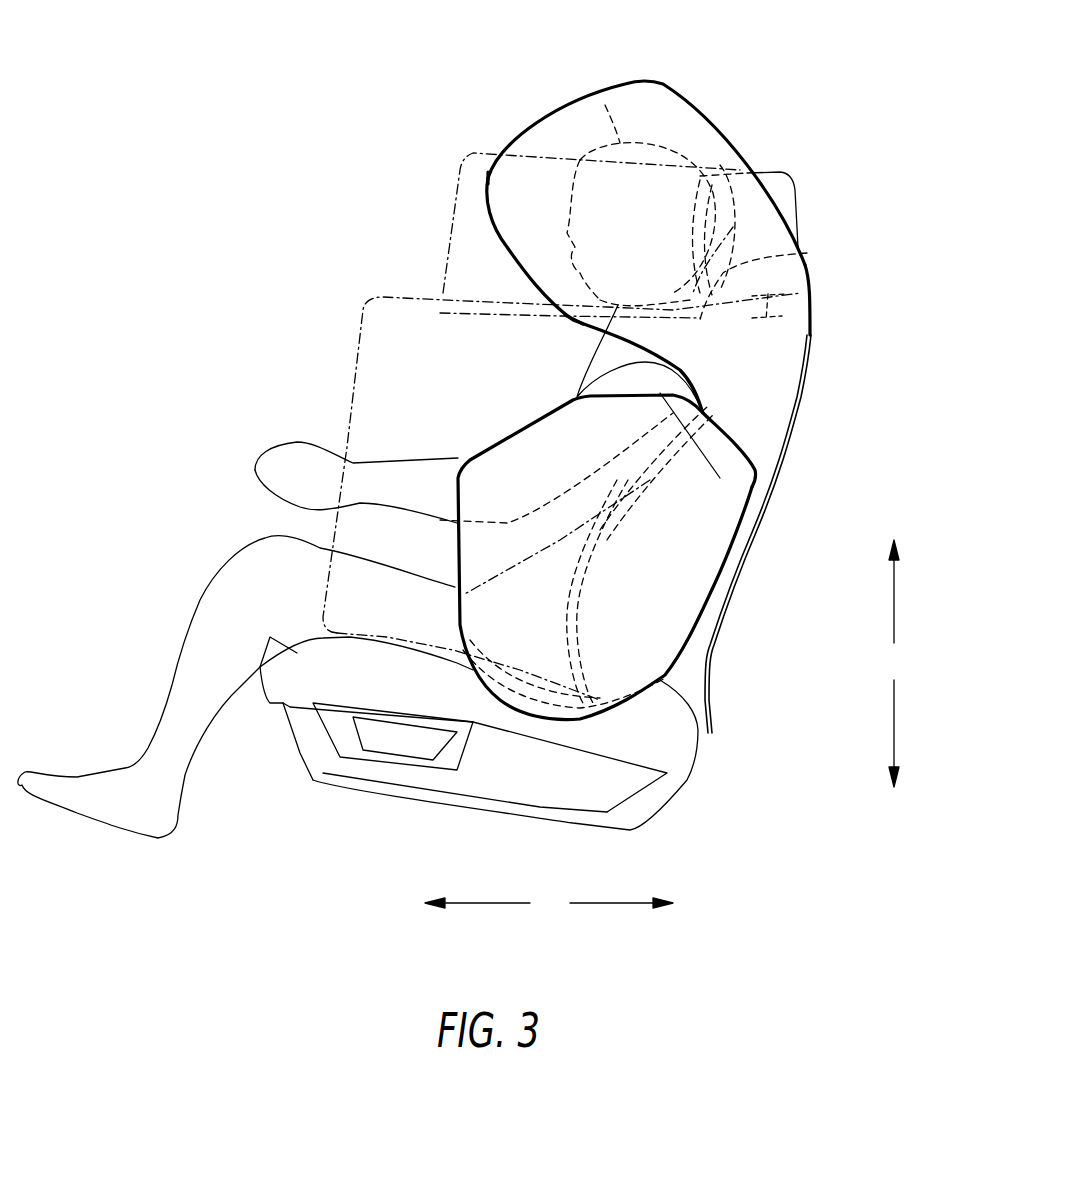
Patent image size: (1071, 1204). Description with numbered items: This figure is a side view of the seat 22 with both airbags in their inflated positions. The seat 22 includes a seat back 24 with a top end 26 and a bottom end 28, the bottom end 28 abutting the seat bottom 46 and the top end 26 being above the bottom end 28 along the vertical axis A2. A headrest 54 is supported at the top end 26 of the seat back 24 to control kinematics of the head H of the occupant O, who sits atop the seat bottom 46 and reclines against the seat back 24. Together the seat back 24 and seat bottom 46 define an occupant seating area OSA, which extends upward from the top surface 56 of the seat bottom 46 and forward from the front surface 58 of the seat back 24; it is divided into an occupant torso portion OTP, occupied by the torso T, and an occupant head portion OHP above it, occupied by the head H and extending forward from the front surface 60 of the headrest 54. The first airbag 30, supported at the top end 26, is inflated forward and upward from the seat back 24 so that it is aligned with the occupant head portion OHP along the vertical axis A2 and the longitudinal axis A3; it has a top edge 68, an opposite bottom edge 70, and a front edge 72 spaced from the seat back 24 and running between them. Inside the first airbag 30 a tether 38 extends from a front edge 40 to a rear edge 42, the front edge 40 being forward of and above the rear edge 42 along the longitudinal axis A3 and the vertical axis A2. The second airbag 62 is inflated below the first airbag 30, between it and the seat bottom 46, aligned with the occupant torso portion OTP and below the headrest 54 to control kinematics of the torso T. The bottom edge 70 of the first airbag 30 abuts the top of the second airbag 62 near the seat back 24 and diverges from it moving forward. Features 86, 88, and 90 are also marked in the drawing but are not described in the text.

The seat 22 is at (848, 233).
The seat back 24 is at (770, 500).
The top end 26 is at (812, 352).
The bottom end 28 is at (713, 730).
The first airbag 30 is at (553, 133).
The tether 38 is at (807, 253).
The front edge 40 is at (733, 227).
The rear edge 42 is at (760, 302).
The seat bottom 46 is at (413, 687).
The headrest 54 is at (800, 197).
The top surface 56 is at (387, 637).
The front surface 58 is at (577, 540).
The front surface 60 is at (707, 212).
The second airbag 62 is at (455, 585).
The top edge 68 is at (664, 82).
The bottom edge 70 is at (576, 320).
The front edge 72 is at (488, 177).
The tether 86 is at (720, 478).
The airbag lower end 88 is at (573, 718).
The occupant arm region 90 is at (453, 567).
The head H is at (605, 105).
The torso T is at (560, 447).
The occupant O is at (537, 373).
The occupant seating area OSA is at (222, 173).
The occupant head portion OHP is at (447, 262).
The occupant torso portion OTP is at (353, 350).
The vertical axis A2 is at (894, 663).
The longitudinal axis A3 is at (549, 905).